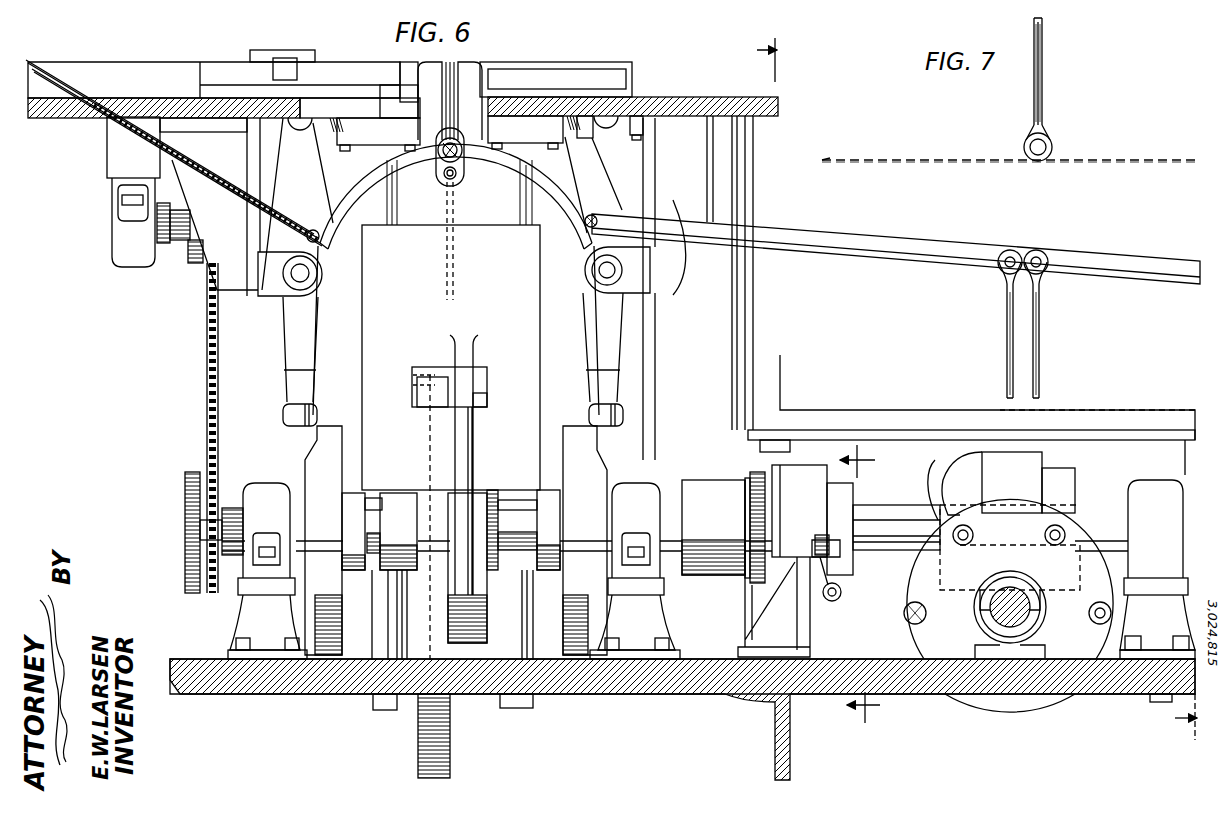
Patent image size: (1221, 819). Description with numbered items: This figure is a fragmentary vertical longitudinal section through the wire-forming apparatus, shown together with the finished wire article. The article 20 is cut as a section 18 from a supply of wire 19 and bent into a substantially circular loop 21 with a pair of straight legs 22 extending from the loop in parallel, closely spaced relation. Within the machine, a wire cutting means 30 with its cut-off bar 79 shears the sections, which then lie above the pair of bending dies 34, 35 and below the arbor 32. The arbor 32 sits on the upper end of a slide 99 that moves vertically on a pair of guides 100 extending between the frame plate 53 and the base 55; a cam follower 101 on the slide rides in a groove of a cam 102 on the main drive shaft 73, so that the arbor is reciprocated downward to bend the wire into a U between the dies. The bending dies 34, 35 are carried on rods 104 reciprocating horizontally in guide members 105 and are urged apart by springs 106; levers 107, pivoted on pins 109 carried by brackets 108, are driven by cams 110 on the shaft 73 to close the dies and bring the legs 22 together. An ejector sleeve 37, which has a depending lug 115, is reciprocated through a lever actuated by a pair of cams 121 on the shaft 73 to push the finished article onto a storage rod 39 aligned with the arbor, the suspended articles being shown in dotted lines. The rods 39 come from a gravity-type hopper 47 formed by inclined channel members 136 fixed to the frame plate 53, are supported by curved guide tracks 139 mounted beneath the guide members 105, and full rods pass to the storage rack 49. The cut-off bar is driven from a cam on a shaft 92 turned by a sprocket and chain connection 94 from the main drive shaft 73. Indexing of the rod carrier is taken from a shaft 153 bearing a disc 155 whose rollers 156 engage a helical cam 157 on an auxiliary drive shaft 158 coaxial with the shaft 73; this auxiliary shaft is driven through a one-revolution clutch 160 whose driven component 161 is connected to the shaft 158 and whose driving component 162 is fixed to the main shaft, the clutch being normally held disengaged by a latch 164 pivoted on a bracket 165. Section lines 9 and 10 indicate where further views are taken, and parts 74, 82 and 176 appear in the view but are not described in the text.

In FIG. 6, the section line 9- 9 is at (977, 401).
In FIG. 6, the section line 10- 10 is at (860, 590).
In FIG. 7, the wire section 18 is at (942, 156).
In FIG. 7, the wire 19 is at (850, 157).
In FIG. 6, the wire article 20 is at (446, 270).
In FIG. 7, the wire article 20 is at (1060, 112).
In FIG. 6, the circular loop 21 is at (1050, 262).
In FIG. 7, the circular loop 21 is at (1052, 152).
In FIG. 6, the straight legs 22 is at (1042, 368).
In FIG. 7, the straight legs 22 is at (1052, 84).
In FIG. 6, the wire cutting means 30 is at (266, 58).
In FIG. 6, the arbor 32 is at (436, 145).
In FIG. 6, the bending die 34 is at (426, 76).
In FIG. 6, the bending die 35 is at (472, 76).
In FIG. 6, the ejector sleeve 37 is at (466, 147).
In FIG. 6, the rod 39 is at (112, 118).
In FIG. 6, the gravity-type hopper 47 is at (97, 90).
In FIG. 6, the storage rack 49 is at (960, 274).
In FIG. 6, the frame plate 53 is at (44, 120).
In FIG. 6, the base 55 is at (640, 688).
In FIG. 6, the main drive shaft 73 is at (182, 532).
In FIG. 6, the sprocket 74 is at (190, 586).
In FIG. 6, the cut-off bar 79 is at (288, 62).
In FIG. 6, the housing 82 is at (556, 70).
In FIG. 6, the shaft 92 is at (196, 250).
In FIG. 6, the sprocket and chain connection 94 is at (206, 346).
In FIG. 6, the slide 99 is at (375, 340).
In FIG. 6, the guides 100 is at (380, 216).
In FIG. 6, the cam follower 101 is at (428, 404).
In FIG. 6, the cam 102 is at (418, 722).
In FIG. 6, the rods 104 is at (300, 118).
In FIG. 6, the guide members 105 is at (352, 120).
In FIG. 6, the springs 106 is at (596, 118).
In FIG. 6, the levers 107 is at (298, 344).
In FIG. 6, the brackets 108 is at (232, 282).
In FIG. 6, the pins 109 is at (292, 290).
In FIG. 6, the cams 110 is at (322, 460).
In FIG. 6, the depending lug 115 is at (466, 205).
In FIG. 6, the cams 121 is at (472, 645).
In FIG. 6, the inclined channel members 136 is at (54, 66).
In FIG. 6, the curved guide members 139 is at (340, 205).
In FIG. 6, the shaft 153 is at (996, 608).
In FIG. 6, the disc 155 is at (916, 584).
In FIG. 6, the rollers 156 is at (970, 548).
In FIG. 6, the helical cam 157 is at (1040, 458).
In FIG. 6, the auxiliary drive shaft 158 is at (908, 516).
In FIG. 6, the one-revolution clutch 160 is at (772, 462).
In FIG. 6, the driven component 161 is at (838, 498).
In FIG. 6, the driving component 162 is at (792, 455).
In FIG. 6, the latch 164 is at (830, 530).
In FIG. 6, the bracket 165 is at (796, 630).
In FIG. 6, the sprocket 176 is at (742, 570).